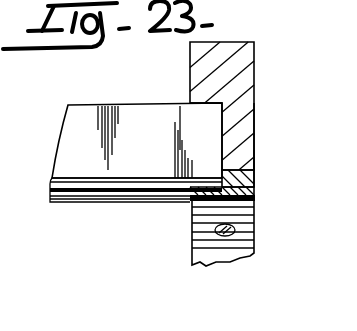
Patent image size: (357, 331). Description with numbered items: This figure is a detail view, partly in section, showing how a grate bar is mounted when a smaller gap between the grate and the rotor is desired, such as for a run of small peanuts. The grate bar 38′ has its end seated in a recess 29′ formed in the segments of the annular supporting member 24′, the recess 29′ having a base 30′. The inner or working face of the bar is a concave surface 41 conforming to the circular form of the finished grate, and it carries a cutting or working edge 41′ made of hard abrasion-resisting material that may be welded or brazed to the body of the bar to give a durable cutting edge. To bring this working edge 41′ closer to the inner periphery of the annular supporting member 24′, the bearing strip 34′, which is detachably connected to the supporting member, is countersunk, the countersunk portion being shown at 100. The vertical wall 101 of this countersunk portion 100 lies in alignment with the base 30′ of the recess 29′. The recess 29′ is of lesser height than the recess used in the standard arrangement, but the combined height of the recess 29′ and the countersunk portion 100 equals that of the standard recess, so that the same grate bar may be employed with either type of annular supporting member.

The annular supporting member 24′ is at (248, 81).
The recess 29′ is at (190, 101).
The base of recess 30′ is at (247, 124).
The bearing strip 34′ is at (256, 183).
The grate bar 38′ is at (86, 110).
The concave surface 41 is at (88, 198).
The cutting edge 41′ is at (137, 195).
The countersunk portion 100 is at (190, 200).
The vertical wall 101 is at (248, 163).